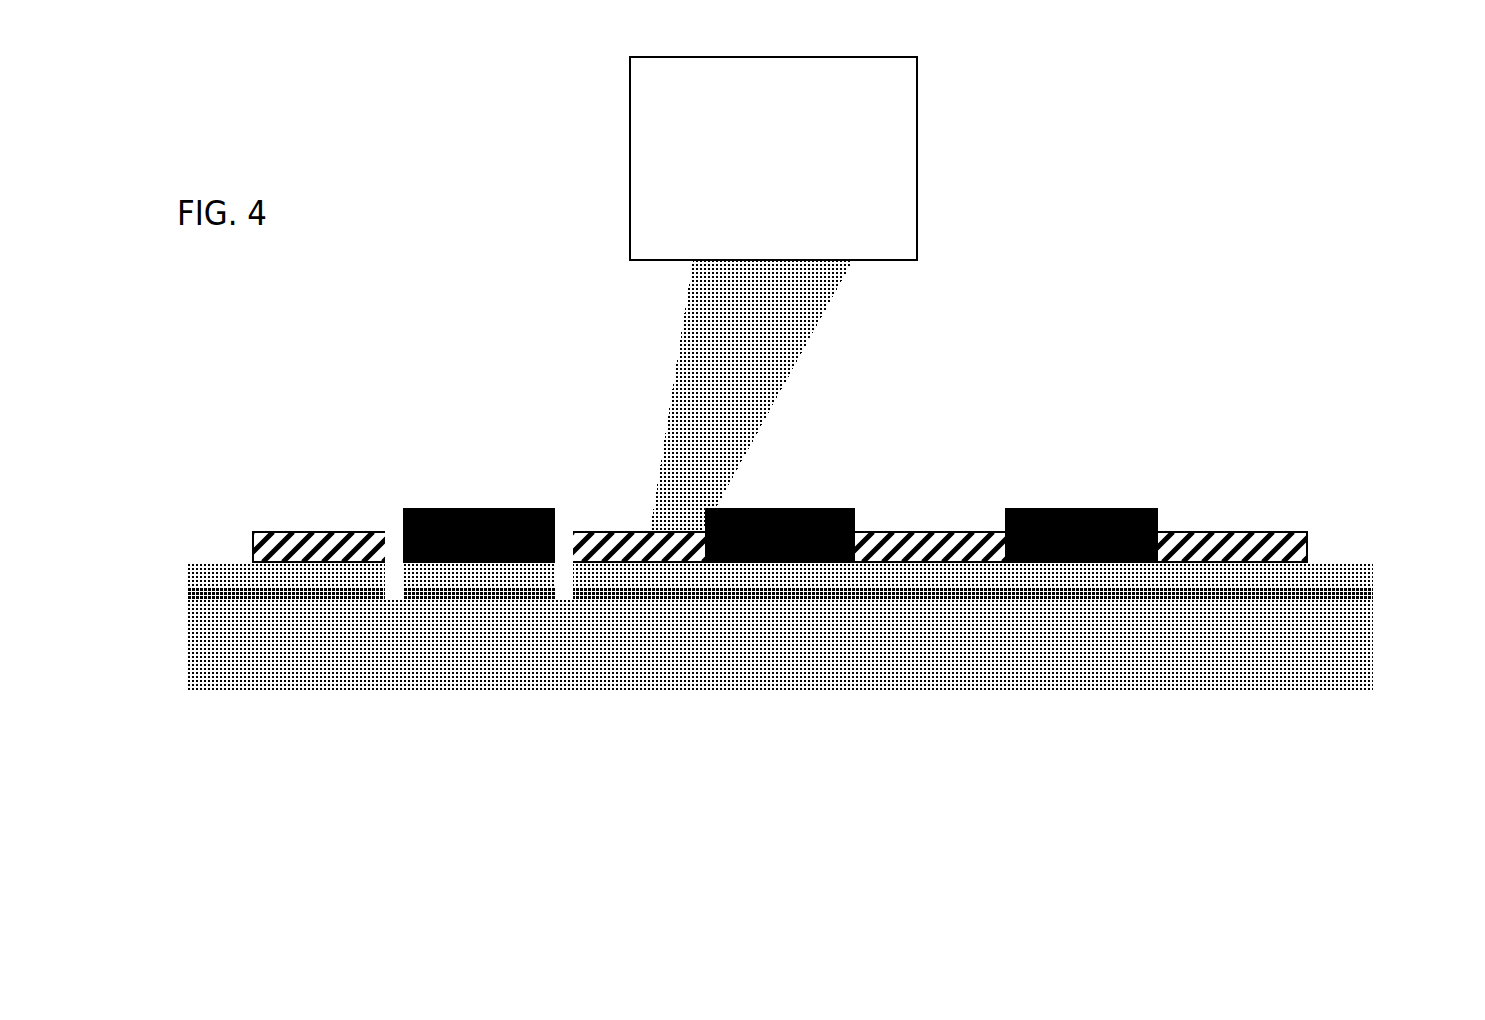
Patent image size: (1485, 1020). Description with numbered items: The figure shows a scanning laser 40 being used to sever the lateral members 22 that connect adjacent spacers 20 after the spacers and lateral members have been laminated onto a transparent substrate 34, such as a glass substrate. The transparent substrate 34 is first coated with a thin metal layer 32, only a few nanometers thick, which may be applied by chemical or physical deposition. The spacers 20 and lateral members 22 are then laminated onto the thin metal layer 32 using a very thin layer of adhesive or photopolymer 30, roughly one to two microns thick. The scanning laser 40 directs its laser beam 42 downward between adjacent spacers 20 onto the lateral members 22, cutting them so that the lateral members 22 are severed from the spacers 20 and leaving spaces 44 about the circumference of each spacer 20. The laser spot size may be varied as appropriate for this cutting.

The spacer 20 is at (455, 505).
The lateral member 22 is at (923, 530).
The layer of adhesive or photopolymer 30 is at (1358, 573).
The thin metal layer 32 is at (190, 593).
The transparent substrate 34 is at (965, 650).
The scanning laser 40 is at (758, 210).
The laser beam 42 is at (768, 394).
The space 44 is at (392, 516).